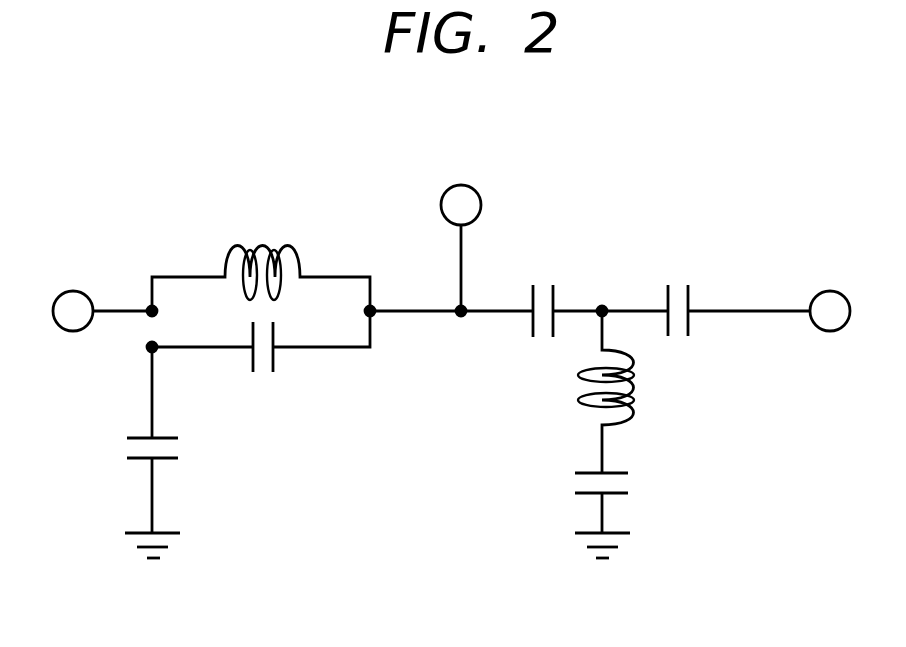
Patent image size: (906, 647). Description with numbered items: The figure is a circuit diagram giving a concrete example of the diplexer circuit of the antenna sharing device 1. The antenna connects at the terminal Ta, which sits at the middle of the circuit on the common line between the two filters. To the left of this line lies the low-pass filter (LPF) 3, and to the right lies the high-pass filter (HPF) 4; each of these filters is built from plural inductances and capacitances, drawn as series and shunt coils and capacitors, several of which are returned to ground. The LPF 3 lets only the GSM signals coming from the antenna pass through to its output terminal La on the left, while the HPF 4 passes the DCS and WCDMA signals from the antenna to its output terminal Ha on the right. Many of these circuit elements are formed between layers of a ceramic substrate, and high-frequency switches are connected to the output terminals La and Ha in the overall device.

The antenna sharing device 1 is at (432, 523).
The low-pass filter 3 is at (190, 228).
The high-pass filter 4 is at (727, 227).
The output terminal La is at (72, 291).
The terminal Ta is at (481, 205).
The output terminal Ha is at (828, 291).